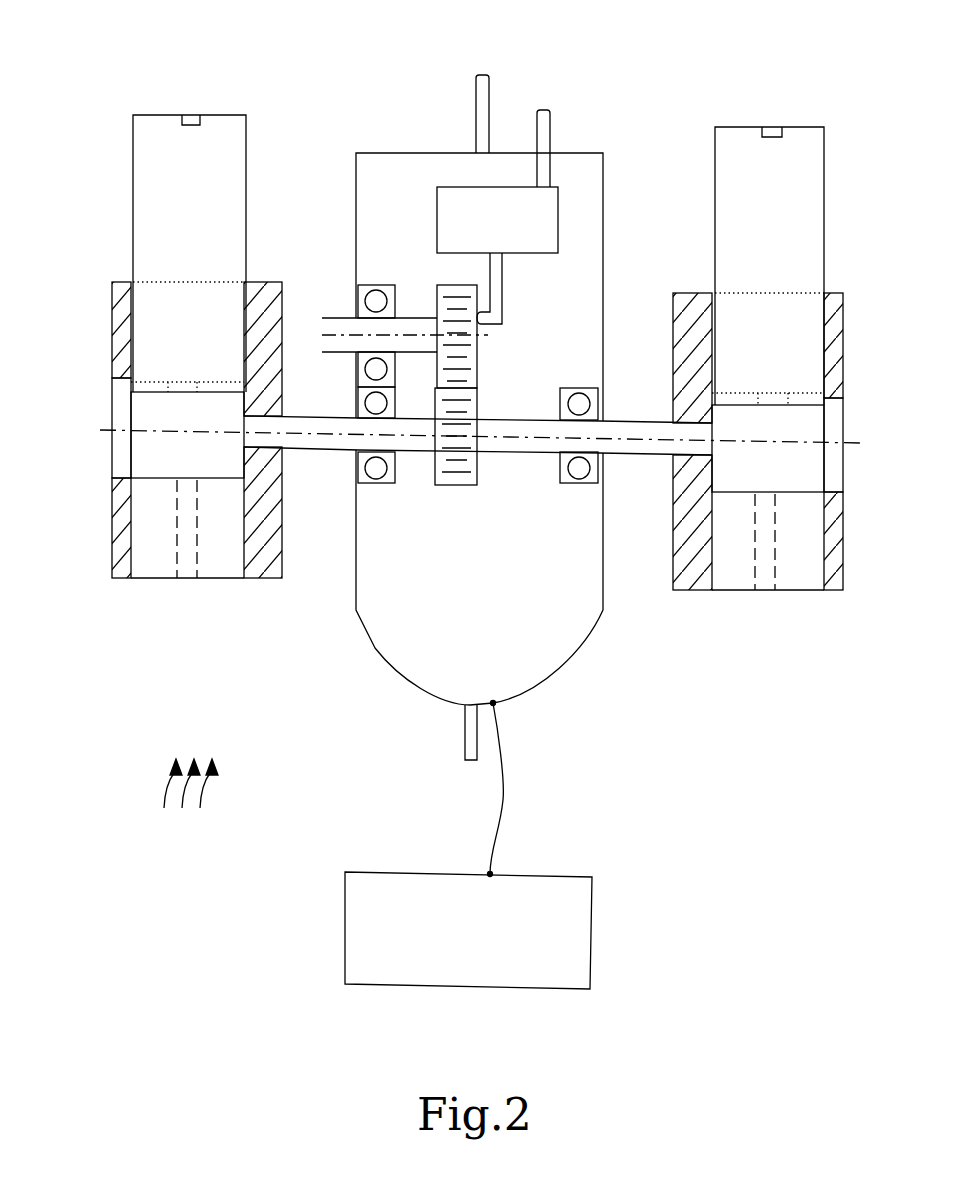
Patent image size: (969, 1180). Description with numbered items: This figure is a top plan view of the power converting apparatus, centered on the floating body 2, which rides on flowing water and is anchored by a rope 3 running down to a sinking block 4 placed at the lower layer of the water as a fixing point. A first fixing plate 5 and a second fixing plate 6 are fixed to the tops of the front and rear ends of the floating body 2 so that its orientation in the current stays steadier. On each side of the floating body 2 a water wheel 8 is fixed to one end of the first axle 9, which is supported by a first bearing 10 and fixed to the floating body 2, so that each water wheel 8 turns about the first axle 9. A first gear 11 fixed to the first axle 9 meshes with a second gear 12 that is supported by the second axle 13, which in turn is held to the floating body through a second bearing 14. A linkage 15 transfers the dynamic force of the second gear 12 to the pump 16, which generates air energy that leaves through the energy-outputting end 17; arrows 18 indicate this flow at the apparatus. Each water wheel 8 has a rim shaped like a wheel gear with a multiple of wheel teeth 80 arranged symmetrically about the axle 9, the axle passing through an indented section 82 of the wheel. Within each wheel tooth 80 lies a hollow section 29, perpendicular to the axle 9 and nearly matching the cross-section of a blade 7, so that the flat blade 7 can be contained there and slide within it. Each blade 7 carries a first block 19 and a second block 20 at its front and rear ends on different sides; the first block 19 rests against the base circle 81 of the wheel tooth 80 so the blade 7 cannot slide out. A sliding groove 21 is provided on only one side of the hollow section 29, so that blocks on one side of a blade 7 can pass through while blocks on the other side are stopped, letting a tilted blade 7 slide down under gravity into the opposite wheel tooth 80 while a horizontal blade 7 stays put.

The floating body 2 is at (378, 640).
The rope 3 is at (505, 800).
The sinking block 4 is at (588, 930).
The first fixing plate 5 is at (463, 737).
The second fixing plate 6 is at (483, 75).
The blade 7 is at (137, 181).
The water wheel 8 is at (474, 465).
The first axle 9 is at (322, 455).
The first bearing 10 is at (383, 490).
The first gear 11 is at (450, 490).
The second gear 12 is at (440, 290).
The second axle 13 is at (358, 332).
The second bearing 14 is at (358, 300).
The linkage 15 is at (502, 272).
The pump 16 is at (440, 212).
The energy-outputting end 17 is at (543, 110).
The air flow arrows 18 is at (191, 801).
The first block 19 is at (191, 115).
The second block 20 is at (157, 432).
The sliding groove 21 is at (188, 580).
The hollow section 29 is at (216, 580).
The wheel teeth 80 is at (118, 310).
The base circle 81 is at (477, 442).
The indented section 82 is at (135, 418).